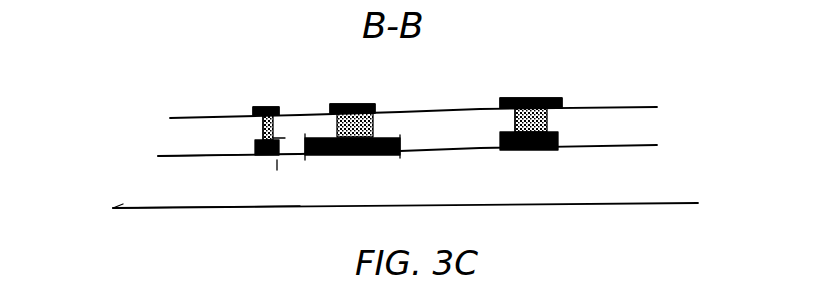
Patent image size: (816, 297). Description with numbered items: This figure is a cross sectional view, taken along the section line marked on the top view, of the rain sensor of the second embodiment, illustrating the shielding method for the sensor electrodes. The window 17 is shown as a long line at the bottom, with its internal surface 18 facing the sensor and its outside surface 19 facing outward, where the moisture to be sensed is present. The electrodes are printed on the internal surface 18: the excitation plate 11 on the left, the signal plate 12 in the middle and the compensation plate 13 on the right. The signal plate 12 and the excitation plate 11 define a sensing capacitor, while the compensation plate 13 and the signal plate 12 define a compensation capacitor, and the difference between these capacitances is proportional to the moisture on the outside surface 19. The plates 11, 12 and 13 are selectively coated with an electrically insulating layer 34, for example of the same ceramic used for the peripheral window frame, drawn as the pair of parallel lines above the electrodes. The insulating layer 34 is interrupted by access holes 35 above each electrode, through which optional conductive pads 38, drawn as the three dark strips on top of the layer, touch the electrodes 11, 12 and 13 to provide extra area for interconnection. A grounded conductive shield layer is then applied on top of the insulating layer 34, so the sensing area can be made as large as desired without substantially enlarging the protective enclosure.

The excitation plate 11 is at (265, 158).
The signal plate 12 is at (350, 153).
The compensation plate 13 is at (530, 151).
The window 17 is at (405, 188).
The internal surface 18 is at (168, 155).
The outside surface 19 is at (676, 204).
The electrically insulating layer 34 is at (407, 131).
The access holes 35 is at (265, 119).
The conductive pads 38 is at (505, 92).